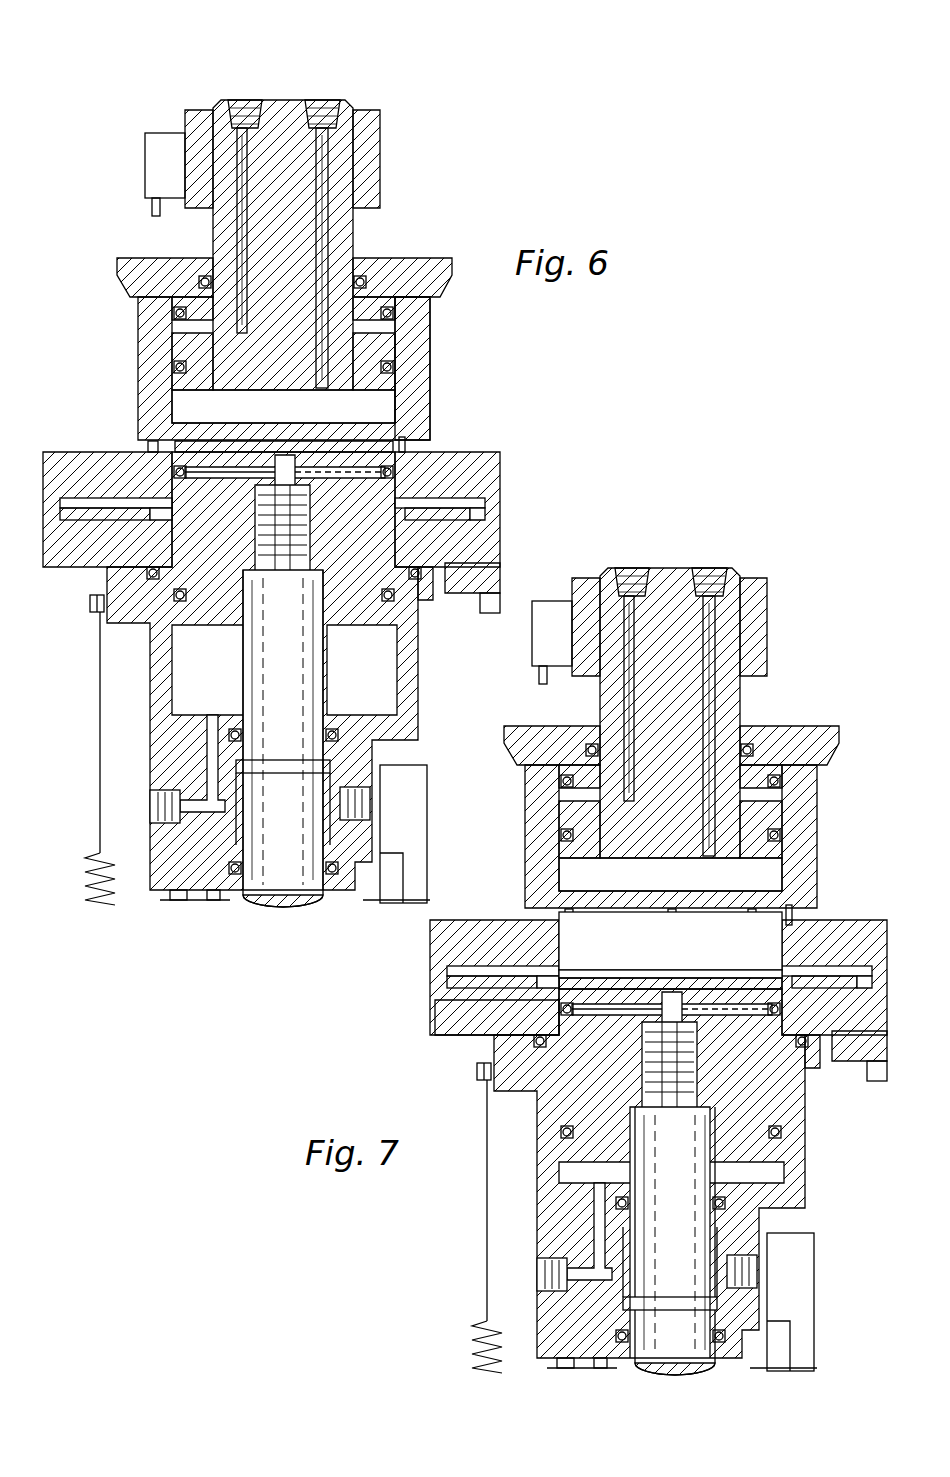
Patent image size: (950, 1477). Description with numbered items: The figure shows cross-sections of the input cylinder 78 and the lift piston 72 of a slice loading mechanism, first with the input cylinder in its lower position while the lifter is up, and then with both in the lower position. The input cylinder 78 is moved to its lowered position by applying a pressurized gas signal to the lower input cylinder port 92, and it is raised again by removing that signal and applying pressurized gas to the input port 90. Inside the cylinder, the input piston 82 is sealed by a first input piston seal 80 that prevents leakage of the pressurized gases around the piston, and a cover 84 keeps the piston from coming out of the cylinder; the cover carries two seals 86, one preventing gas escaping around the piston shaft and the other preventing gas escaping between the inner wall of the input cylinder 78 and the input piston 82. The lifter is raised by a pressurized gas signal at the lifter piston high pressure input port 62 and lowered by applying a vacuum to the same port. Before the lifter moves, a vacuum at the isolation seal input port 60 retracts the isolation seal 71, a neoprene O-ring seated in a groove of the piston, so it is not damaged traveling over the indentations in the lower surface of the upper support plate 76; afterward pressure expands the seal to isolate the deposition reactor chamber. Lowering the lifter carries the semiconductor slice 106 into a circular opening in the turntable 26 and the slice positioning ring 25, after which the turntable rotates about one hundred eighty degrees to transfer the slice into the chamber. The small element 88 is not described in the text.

In FIG. 7, the slice positioning ring 25 is at (472, 1034).
In FIG. 7, the turntable 26 is at (448, 980).
In FIG. 6, the isolation seal input port 60 is at (387, 800).
In FIG. 7, the isolation seal input port 60 is at (775, 1270).
In FIG. 6, the lifter piston high pressure input port 62 is at (152, 805).
In FIG. 7, the lifter piston high pressure input port 62 is at (545, 1278).
In FIG. 6, the isolation seal 71 is at (492, 466).
In FIG. 7, the isolation seal 71 is at (510, 1010).
In FIG. 7, the lift piston 72 is at (548, 1115).
In FIG. 6, the upper support plate 76 is at (497, 490).
In FIG. 7, the upper support plate 76 is at (445, 932).
In FIG. 6, the input cylinder 78 is at (432, 352).
In FIG. 7, the input cylinder 78 is at (805, 830).
In FIG. 6, the first input piston seal 80 is at (432, 385).
In FIG. 6, the input piston 82 is at (178, 398).
In FIG. 7, the input piston 82 is at (565, 828).
In FIG. 6, the cover 84 is at (428, 265).
In FIG. 7, the cover 84 is at (815, 735).
In FIG. 6, the seals 86 is at (195, 278).
In FIG. 7, the seals 86 is at (580, 752).
In FIG. 6, the switch 88 is at (145, 167).
In FIG. 7, the switch 88 is at (535, 643).
In FIG. 6, the input port 90 is at (246, 100).
In FIG. 7, the input port 90 is at (632, 570).
In FIG. 6, the lower input cylinder port 92 is at (330, 100).
In FIG. 7, the lower input cylinder port 92 is at (715, 570).
In FIG. 7, the semiconductor slice 106 is at (618, 985).